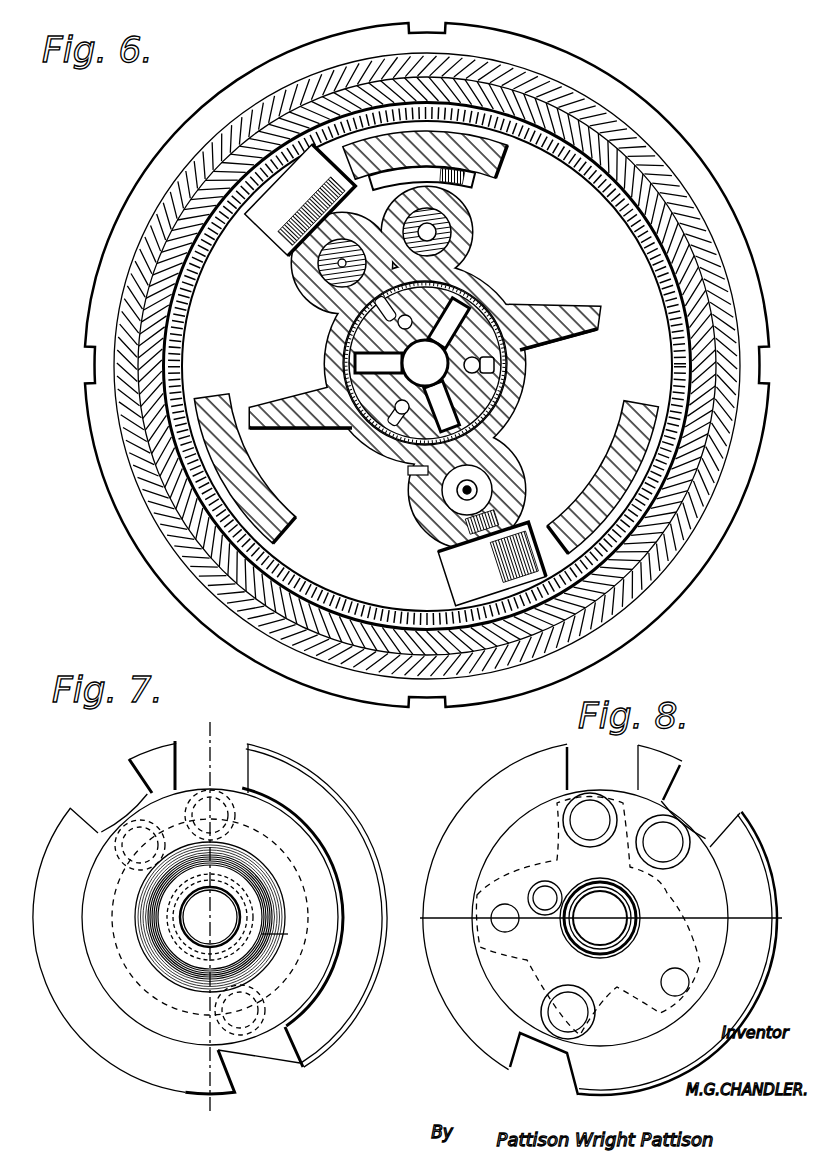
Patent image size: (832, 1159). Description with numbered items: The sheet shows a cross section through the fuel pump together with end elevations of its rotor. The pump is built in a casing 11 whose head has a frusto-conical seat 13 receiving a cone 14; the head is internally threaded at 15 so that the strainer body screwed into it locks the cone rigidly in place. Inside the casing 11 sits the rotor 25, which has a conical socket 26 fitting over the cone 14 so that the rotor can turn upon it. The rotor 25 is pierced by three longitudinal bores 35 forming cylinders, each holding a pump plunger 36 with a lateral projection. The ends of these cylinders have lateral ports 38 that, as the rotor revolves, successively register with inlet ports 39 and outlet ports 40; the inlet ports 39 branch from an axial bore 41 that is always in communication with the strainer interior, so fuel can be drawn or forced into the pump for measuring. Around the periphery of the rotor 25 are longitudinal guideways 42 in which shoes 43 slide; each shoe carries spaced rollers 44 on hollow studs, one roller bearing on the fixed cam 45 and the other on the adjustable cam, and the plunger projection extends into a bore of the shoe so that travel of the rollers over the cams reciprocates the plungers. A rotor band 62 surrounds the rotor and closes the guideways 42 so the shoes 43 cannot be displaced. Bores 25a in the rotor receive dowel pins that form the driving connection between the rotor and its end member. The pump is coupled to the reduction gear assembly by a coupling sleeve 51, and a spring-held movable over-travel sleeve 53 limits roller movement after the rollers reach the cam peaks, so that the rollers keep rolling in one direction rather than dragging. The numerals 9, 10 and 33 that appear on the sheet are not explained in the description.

In FIG. 7, the section line 9- 9 is at (207, 918).
In FIG. 7, the central opening of casing 10 is at (135, 838).
In FIG. 6, the casing 11 is at (500, 93).
In FIG. 7, the casing 11 is at (230, 967).
In FIG. 8, the frusto-conical seat 13 is at (602, 920).
In FIG. 6, the cone 14 is at (505, 392).
In FIG. 8, the internally threaded portion of the head 15 is at (540, 893).
In FIG. 6, the rotor 25 is at (470, 279).
In FIG. 7, the rotor 25 is at (307, 812).
In FIG. 8, the bores of the rotor 25a is at (503, 920).
In FIG. 6, the conical socket 26 is at (512, 375).
In FIG. 6, the pin 33 is at (494, 365).
In FIG. 7, the pin 33 is at (288, 934).
In FIG. 8, the pin 33 is at (600, 918).
In FIG. 6, the longitudinal bores 35 is at (437, 234).
In FIG. 7, the longitudinal bores 35 is at (293, 790).
In FIG. 8, the longitudinal bores 35 is at (607, 822).
In FIG. 6, the pump plungers 36 is at (452, 224).
In FIG. 6, the lateral ports 38 is at (417, 473).
In FIG. 6, the inlet ports 39 is at (500, 290).
In FIG. 6, the outlet ports 40 is at (545, 333).
In FIG. 6, the axial bore 41 is at (425, 363).
In FIG. 7, the guideways 42 is at (210, 917).
In FIG. 8, the guideways 42 is at (600, 919).
In FIG. 6, the shoes 43 is at (265, 233).
In FIG. 6, the rollers 44 is at (408, 380).
In FIG. 6, the fixed cam 45 is at (498, 150).
In FIG. 6, the coupling sleeve 51 is at (653, 170).
In FIG. 6, the movable over-travel sleeve 53 is at (551, 127).
In FIG. 6, the rotor band 62 is at (622, 207).